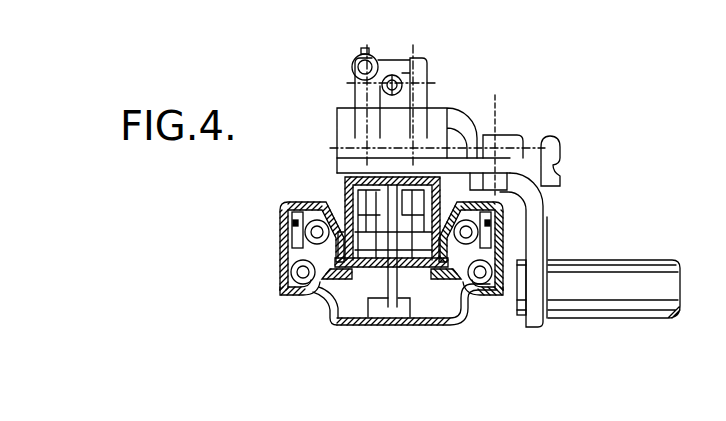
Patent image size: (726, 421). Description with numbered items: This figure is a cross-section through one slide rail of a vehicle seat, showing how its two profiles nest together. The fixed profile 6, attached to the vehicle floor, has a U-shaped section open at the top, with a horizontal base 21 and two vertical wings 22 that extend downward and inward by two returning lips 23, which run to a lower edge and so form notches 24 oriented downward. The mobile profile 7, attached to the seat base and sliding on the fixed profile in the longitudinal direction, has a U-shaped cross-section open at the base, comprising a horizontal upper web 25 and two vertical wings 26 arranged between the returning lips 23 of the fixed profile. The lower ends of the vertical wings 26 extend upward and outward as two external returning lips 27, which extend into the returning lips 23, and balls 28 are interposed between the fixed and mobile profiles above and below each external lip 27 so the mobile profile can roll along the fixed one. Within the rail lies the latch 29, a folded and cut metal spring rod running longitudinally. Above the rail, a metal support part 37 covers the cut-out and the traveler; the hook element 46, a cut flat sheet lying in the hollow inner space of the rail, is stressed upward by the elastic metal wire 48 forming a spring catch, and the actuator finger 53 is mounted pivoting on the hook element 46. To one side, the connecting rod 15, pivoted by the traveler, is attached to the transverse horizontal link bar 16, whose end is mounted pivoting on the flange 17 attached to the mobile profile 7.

The fixed profile 6 is at (328, 314).
The mobile profile 7 is at (345, 186).
The connecting rod 15 is at (545, 237).
The transverse horizontal link bar 16 is at (647, 287).
The flange 17 is at (532, 308).
The horizontal base 21 is at (446, 324).
The vertical wing 22 is at (300, 270).
The returning lip 23 is at (343, 194).
The notch 24 is at (316, 288).
The horizontal upper web 25 is at (385, 175).
The vertical wing 26 is at (507, 178).
The external returning lip 27 is at (297, 224).
The ball 28 is at (287, 278).
The latch 29 is at (367, 264).
The metal support part 37 is at (420, 108).
The hook element 46 is at (383, 245).
The elastic metal wire 48 is at (440, 196).
The actuator finger 53 is at (391, 287).